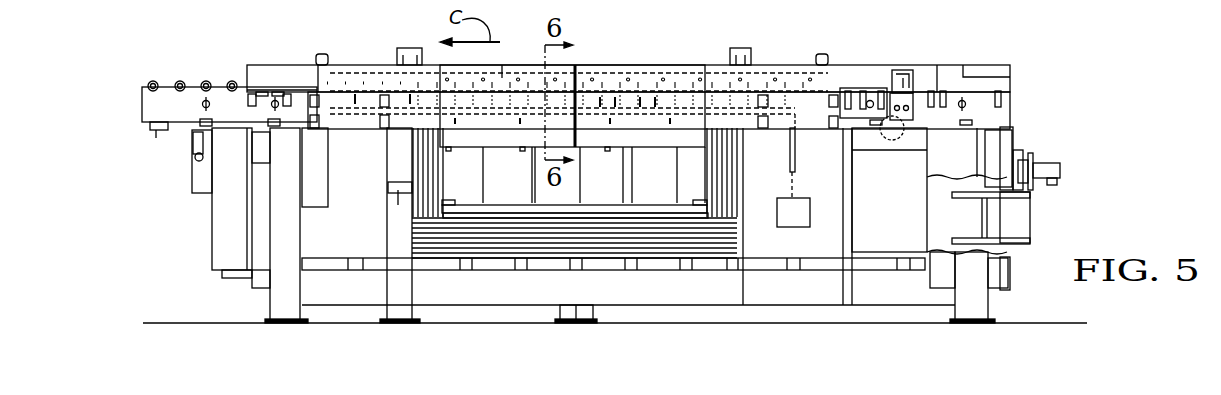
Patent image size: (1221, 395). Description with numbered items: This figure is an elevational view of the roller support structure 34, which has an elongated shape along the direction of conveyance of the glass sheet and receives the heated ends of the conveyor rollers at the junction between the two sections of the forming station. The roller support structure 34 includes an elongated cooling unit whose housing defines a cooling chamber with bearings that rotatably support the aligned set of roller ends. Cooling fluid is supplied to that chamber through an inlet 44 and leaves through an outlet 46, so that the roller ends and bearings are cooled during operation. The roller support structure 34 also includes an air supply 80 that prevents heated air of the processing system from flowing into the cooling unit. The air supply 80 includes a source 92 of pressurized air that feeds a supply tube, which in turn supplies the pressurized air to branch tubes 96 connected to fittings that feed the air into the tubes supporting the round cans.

The roller support structure 34 is at (680, 75).
The inlet 44 is at (826, 54).
The outlet 46 is at (321, 54).
The air supply 80 is at (687, 114).
The source of pressurized air 92 is at (792, 213).
The branch tubes 96 is at (665, 110).